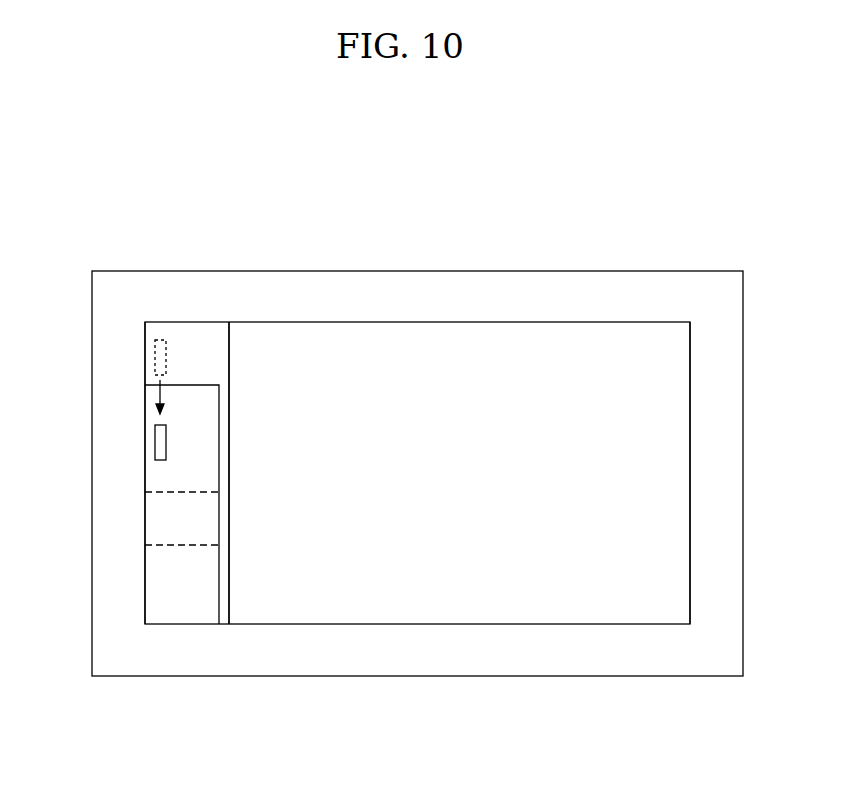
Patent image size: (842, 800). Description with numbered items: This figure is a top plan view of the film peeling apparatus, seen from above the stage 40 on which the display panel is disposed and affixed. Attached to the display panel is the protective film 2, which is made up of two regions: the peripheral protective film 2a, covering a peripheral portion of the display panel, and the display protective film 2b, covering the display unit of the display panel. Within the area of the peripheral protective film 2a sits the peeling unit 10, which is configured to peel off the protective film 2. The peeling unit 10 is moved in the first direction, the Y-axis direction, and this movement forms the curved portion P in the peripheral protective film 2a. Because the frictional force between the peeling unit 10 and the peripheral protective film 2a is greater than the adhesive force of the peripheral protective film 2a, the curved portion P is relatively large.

The stage 40 is at (552, 280).
The protective film 2 is at (175, 736).
The peripheral protective film 2a is at (182, 612).
The display protective film 2b is at (268, 612).
The peeling unit 10 is at (160, 444).
The curved portion P is at (154, 520).